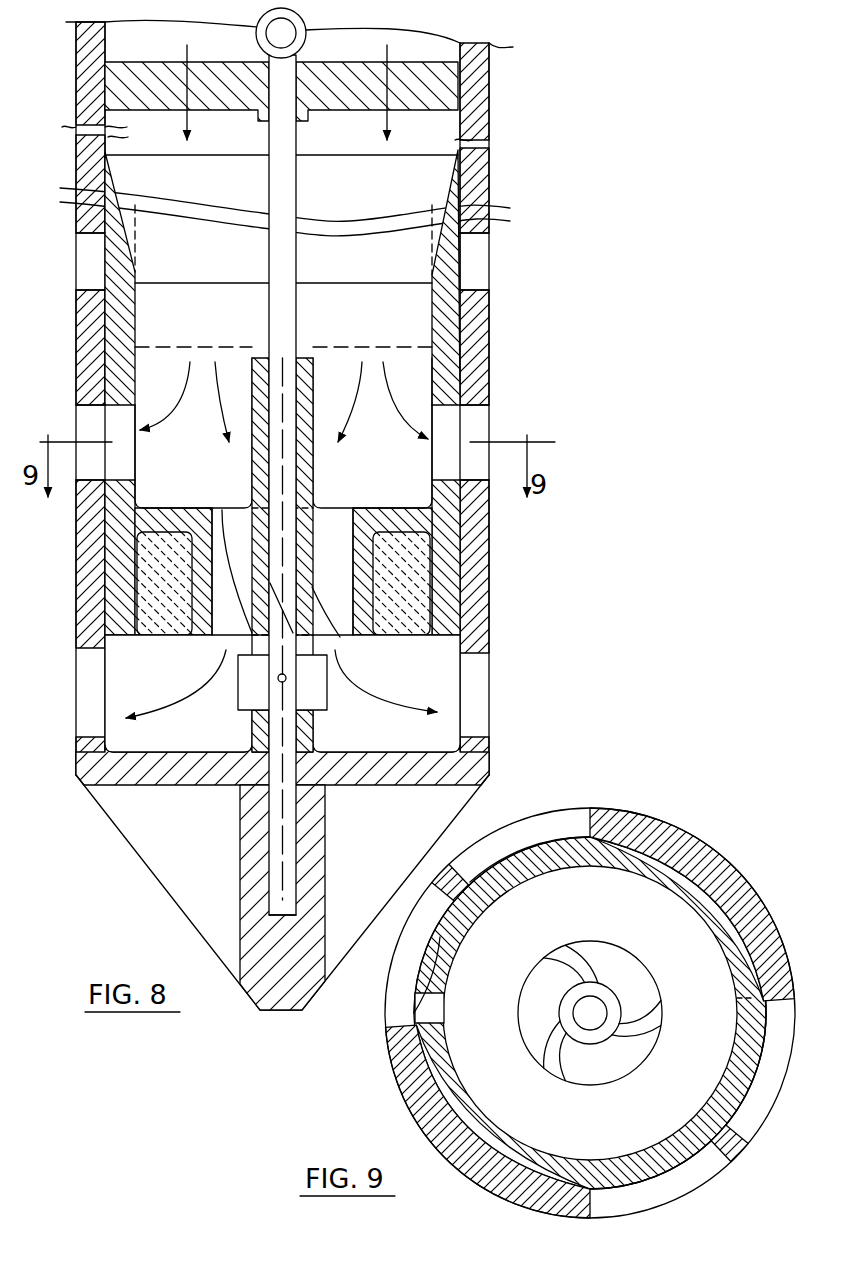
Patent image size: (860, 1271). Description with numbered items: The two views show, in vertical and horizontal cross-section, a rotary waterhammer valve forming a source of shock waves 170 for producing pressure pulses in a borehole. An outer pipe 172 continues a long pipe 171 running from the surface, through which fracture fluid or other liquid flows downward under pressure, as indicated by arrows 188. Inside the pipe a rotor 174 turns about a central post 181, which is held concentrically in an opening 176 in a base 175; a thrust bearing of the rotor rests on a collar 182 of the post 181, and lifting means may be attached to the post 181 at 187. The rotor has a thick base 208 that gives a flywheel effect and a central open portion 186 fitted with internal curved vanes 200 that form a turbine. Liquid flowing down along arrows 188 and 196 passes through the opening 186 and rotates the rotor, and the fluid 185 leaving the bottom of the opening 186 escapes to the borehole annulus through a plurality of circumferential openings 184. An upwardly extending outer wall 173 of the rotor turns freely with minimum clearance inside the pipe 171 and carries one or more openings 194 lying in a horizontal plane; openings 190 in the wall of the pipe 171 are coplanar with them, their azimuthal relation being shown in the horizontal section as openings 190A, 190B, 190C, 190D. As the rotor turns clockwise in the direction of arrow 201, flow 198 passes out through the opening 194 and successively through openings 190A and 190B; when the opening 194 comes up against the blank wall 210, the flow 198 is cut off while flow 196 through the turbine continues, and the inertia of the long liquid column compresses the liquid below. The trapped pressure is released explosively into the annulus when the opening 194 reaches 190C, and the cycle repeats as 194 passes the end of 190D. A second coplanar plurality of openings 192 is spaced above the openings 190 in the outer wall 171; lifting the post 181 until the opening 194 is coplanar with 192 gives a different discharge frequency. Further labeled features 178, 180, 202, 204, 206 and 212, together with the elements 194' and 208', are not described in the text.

In FIG. 8, the source of shock waves 170 is at (508, 194).
In FIG. 8, the long pipe 171 is at (489, 128).
In FIG. 9, the long pipe 171 is at (455, 868).
In FIG. 8, the outer pipe 172 is at (494, 326).
In FIG. 8, the outer wall of the rotor 173 is at (135, 318).
In FIG. 9, the outer wall of the rotor 173 is at (505, 1148).
In FIG. 8, the rotor 174 is at (436, 369).
In FIG. 8, the base 175 is at (327, 853).
In FIG. 8, the opening in the base 176 is at (289, 822).
In FIG. 8, the conical tip 178 is at (148, 868).
In FIG. 8, the shaft end bore 180 is at (286, 890).
In FIG. 8, the central post 181 is at (296, 200).
In FIG. 9, the central post 181 is at (587, 1015).
In FIG. 8, the collar 182 is at (327, 688).
In FIG. 8, the circumferential openings 184 is at (93, 697).
In FIG. 9, the circumferential openings 184 is at (552, 946).
In FIG. 8, the fluid 185 is at (172, 718).
In FIG. 8, the central open portion 186 is at (351, 553).
In FIG. 9, the central open portion 186 is at (638, 1040).
In FIG. 8, the attachment point on post 187 is at (305, 28).
In FIG. 8, the flow arrows 188 is at (190, 136).
In FIG. 8, the openings in the pipe wall 190 is at (82, 425).
In FIG. 9, the pipe opening 190A is at (400, 930).
In FIG. 9, the pipe opening 190B is at (515, 825).
In FIG. 9, the pipe opening 190C is at (757, 1113).
In FIG. 9, the pipe opening 190D is at (642, 1196).
In FIG. 8, the second plurality of openings 192 is at (78, 263).
In FIG. 8, the openings in the rotor wall 194 is at (282, 433).
In FIG. 9, the openings in the rotor wall 194 is at (453, 1005).
In FIG. 8, the upper liquid level 194' is at (284, 243).
In FIG. 8, the flow arrows 196 is at (217, 405).
In FIG. 8, the outflow 198 is at (160, 427).
In FIG. 8, the curved vanes 200 is at (226, 512).
In FIG. 9, the curved vanes 200 is at (637, 972).
In FIG. 9, the rotation arrow 201 is at (646, 904).
In FIG. 8, the flow passage 202 is at (205, 636).
In FIG. 8, the stator coil 204 is at (165, 628).
In FIG. 8, the stator housing 206 is at (415, 578).
In FIG. 8, the thick base of the rotor 208 is at (326, 265).
In FIG. 9, the thick base of the rotor 208 is at (493, 943).
In FIG. 8, the lower liquid level 208' is at (283, 331).
In FIG. 9, the blank wall 210 is at (645, 823).
In FIG. 9, the deflector vane 212 is at (410, 1062).